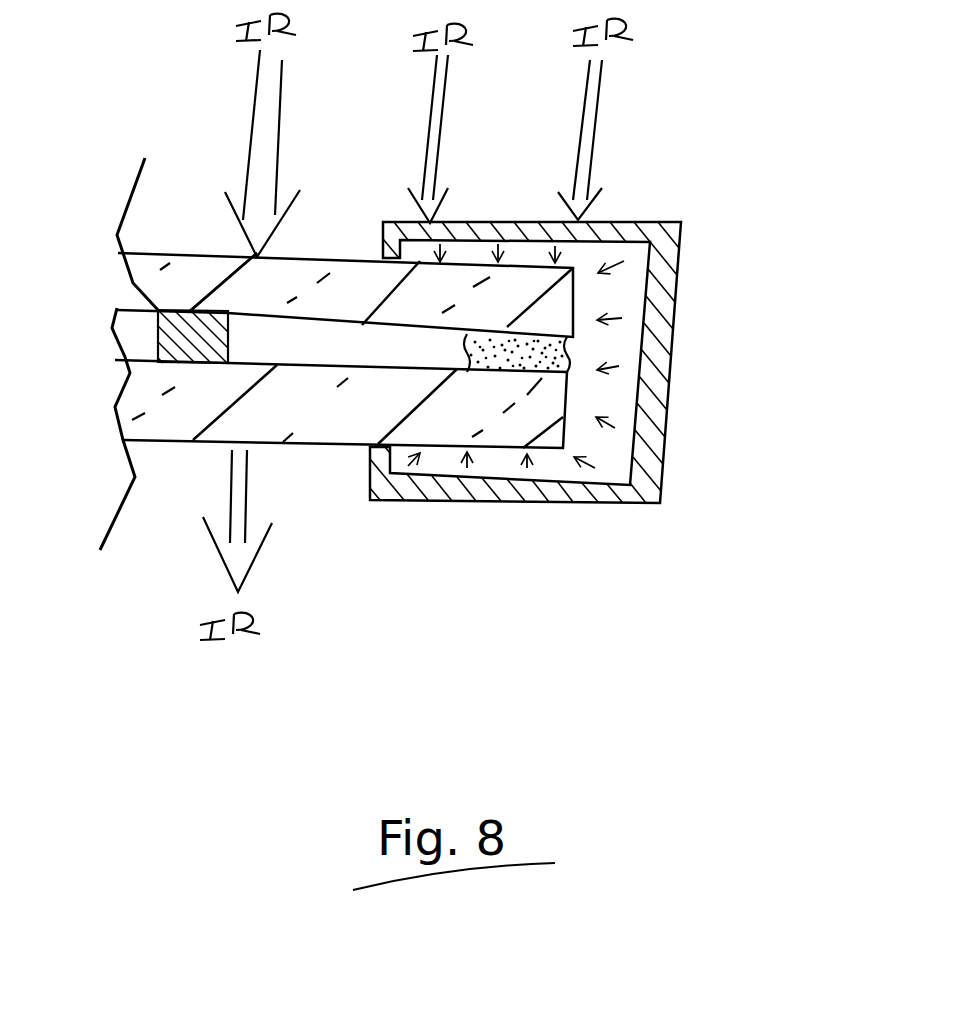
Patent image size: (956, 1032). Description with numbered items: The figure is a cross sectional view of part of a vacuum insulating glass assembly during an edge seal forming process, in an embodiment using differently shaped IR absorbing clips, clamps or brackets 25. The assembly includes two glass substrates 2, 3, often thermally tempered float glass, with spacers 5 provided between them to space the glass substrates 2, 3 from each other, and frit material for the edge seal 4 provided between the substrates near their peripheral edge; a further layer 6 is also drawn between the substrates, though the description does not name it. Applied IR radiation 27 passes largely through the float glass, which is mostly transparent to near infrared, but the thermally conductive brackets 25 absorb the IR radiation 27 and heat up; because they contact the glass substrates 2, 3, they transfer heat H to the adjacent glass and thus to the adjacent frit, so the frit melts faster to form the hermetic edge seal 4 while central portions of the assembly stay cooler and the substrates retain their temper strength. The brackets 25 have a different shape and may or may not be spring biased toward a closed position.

The glass substrate 2 is at (194, 268).
The glass substrate 3 is at (178, 416).
The edge seal 4 is at (776, 328).
The spacers 5 is at (147, 298).
The spacer layer 6 is at (125, 333).
The IR absorbing clips/clamps/brackets 25 is at (849, 402).
The IR radiation 27 is at (602, 148).
The heat H is at (610, 418).